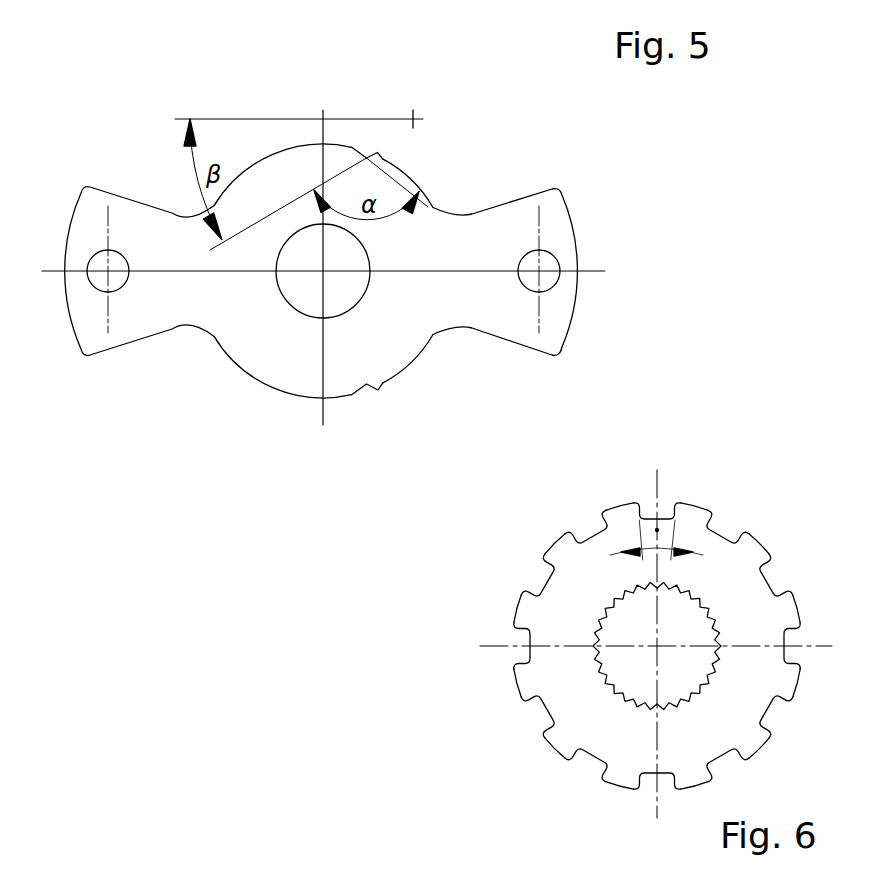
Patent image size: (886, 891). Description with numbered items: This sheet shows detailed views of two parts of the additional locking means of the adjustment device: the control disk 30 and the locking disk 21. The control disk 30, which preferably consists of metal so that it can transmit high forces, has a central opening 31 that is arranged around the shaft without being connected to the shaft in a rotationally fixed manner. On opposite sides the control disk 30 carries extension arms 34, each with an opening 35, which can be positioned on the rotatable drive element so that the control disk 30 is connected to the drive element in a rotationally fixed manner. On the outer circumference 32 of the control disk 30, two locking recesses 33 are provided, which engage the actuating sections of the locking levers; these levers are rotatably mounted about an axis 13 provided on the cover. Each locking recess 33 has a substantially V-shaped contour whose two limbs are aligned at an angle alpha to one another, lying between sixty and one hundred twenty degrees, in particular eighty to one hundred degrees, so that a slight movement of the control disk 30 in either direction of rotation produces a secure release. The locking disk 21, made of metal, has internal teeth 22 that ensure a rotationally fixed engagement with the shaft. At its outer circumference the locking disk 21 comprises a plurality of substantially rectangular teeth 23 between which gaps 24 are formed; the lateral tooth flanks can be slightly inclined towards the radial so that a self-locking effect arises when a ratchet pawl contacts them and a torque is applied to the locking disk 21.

In FIG. 5, the axis 13 is at (417, 117).
In FIG. 5, the control disk 30 is at (375, 270).
In FIG. 5, the opening 31 is at (305, 293).
In FIG. 5, the outer circumference 32 is at (277, 150).
In FIG. 5, the locking recesses 33 is at (367, 152).
In FIG. 5, the extension arms 34 is at (85, 218).
In FIG. 5, the opening 35 is at (547, 277).
In FIG. 6, the locking disk 21 is at (597, 655).
In FIG. 6, the internal teeth 22 is at (634, 574).
In FIG. 6, the teeth 23 is at (622, 645).
In FIG. 6, the gaps 24 is at (657, 687).